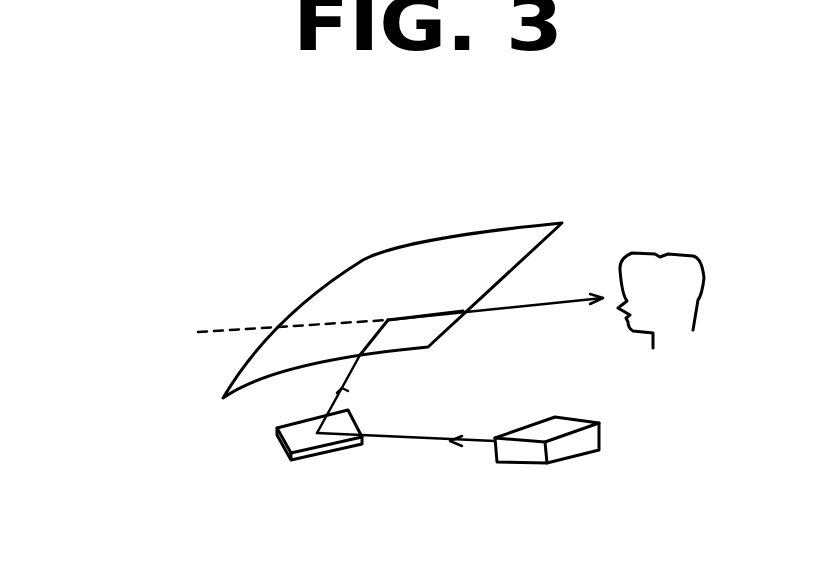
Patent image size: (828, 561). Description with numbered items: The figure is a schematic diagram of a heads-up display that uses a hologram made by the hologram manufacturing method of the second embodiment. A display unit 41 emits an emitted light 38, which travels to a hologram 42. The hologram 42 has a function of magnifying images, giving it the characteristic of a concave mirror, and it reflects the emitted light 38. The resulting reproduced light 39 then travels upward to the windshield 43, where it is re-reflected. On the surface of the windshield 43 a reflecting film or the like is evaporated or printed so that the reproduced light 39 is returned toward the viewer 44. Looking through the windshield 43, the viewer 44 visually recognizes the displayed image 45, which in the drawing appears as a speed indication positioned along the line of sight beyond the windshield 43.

The emitted light 38 is at (413, 442).
The reproduced light 39 is at (357, 372).
The display unit 41 is at (572, 450).
The hologram 42 is at (280, 447).
The windshield 43 is at (500, 227).
The viewer 44 is at (672, 253).
The displayed image 45 is at (135, 307).